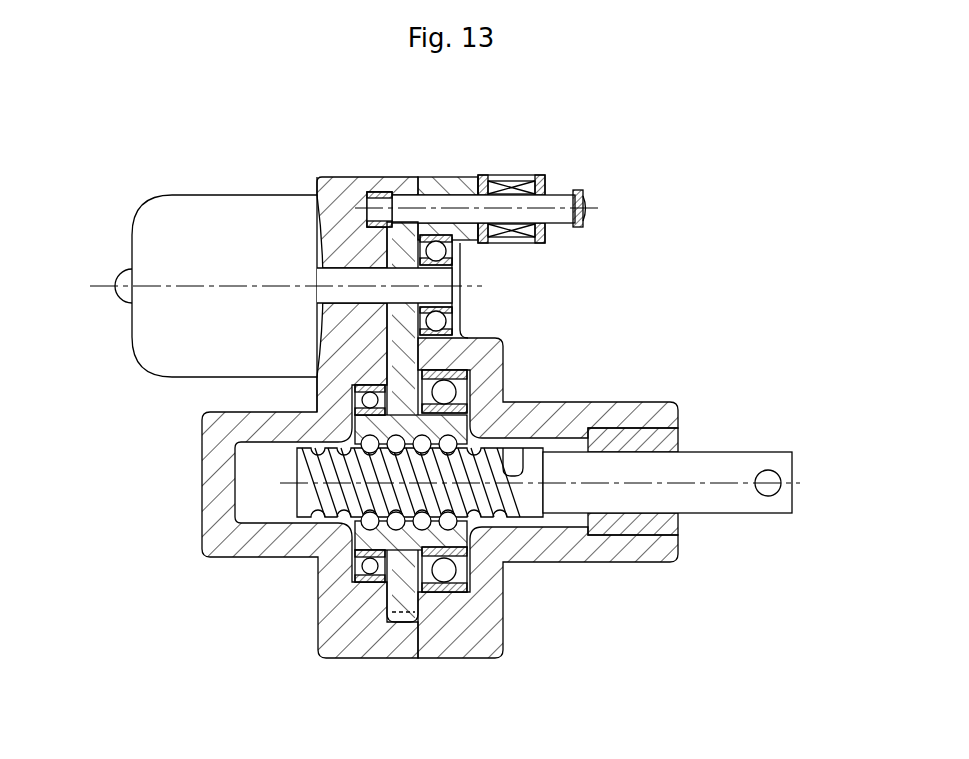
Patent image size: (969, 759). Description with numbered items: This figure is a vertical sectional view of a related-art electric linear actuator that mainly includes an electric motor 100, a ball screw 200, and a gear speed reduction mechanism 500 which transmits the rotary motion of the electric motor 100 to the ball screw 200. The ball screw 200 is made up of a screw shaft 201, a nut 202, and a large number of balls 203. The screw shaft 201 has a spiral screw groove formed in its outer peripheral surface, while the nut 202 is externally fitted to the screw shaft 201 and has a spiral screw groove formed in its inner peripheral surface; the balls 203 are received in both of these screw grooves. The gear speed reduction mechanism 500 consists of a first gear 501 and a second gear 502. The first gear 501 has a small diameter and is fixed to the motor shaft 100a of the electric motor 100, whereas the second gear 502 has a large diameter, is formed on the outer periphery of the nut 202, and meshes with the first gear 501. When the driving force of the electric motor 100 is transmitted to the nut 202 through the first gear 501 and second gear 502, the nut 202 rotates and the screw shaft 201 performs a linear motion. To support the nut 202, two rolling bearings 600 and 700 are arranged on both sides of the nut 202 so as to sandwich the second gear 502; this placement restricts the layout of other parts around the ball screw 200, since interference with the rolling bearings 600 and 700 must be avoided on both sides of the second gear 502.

The electric motor 100 is at (233, 218).
The motor shaft 100a is at (347, 277).
The ball screw 200 is at (545, 528).
The screw shaft 201 is at (723, 462).
The nut 202 is at (360, 428).
The balls 203 is at (360, 522).
The gear speed reduction mechanism 500 is at (516, 422).
The first gear 501 is at (410, 323).
The second gear 502 is at (400, 368).
The rolling bearing 600 is at (368, 582).
The rolling bearing 700 is at (452, 592).